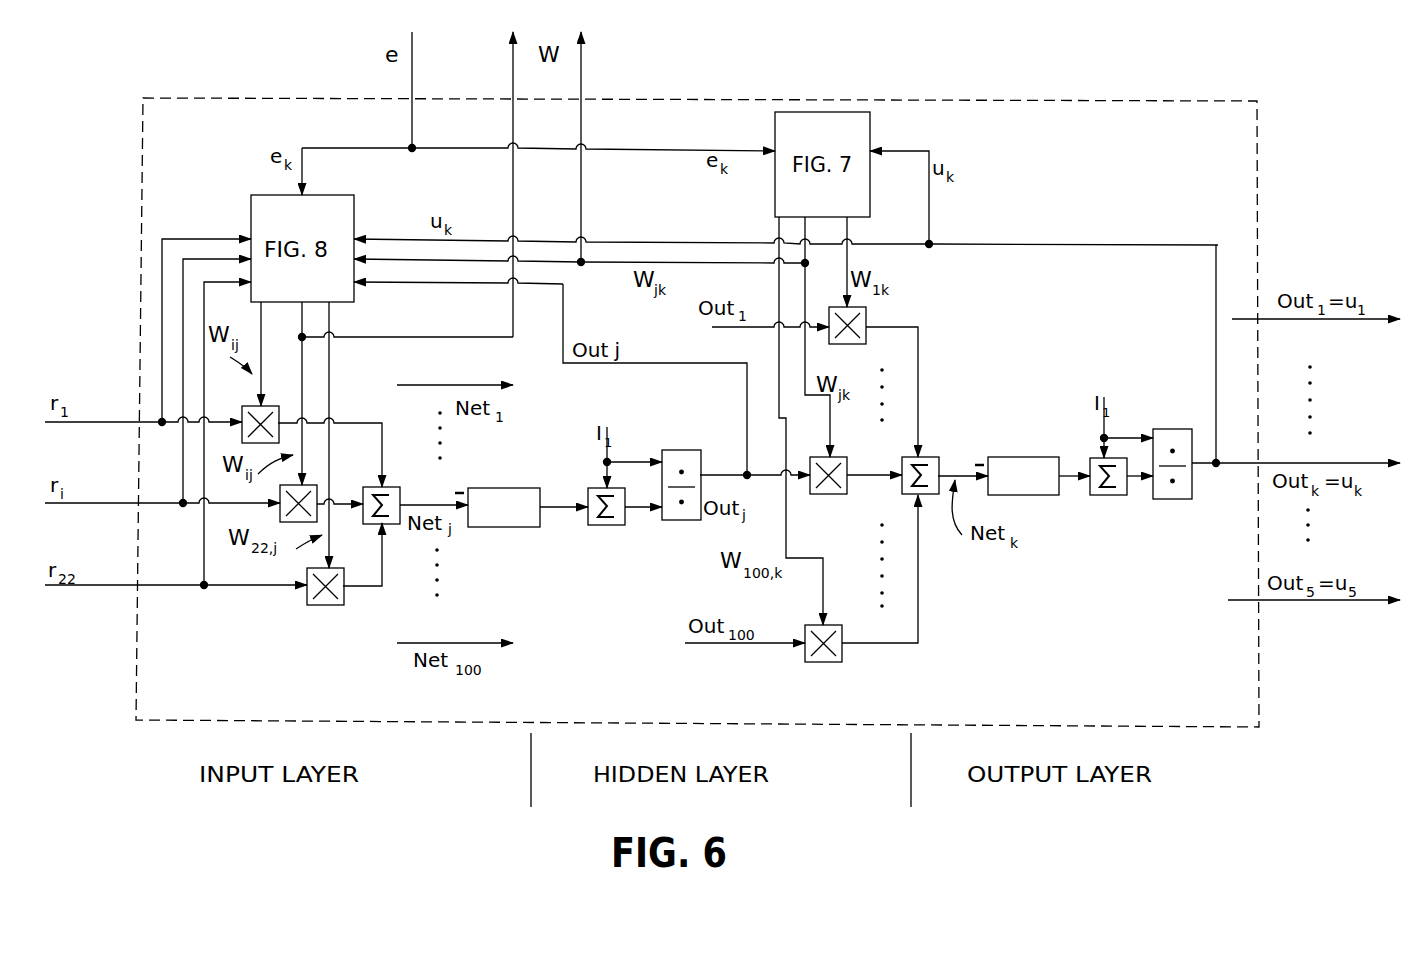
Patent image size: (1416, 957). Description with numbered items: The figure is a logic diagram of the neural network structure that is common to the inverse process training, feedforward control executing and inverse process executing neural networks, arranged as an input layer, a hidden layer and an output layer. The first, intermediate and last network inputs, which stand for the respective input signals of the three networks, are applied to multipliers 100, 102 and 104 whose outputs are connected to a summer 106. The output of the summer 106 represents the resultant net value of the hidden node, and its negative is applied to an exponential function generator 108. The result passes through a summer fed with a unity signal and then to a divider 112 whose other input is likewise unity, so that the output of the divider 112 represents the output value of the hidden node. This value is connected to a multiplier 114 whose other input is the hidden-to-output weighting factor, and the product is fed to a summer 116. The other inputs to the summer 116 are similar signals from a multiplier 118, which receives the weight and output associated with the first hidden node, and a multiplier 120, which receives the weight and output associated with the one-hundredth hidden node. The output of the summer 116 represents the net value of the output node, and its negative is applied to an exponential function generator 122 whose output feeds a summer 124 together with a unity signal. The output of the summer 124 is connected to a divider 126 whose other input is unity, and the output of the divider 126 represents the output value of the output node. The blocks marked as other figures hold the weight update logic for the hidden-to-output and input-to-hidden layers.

The multiplier 100 is at (277, 410).
The multiplier 102 is at (317, 487).
The multiplier 104 is at (333, 606).
The summer 106 is at (400, 487).
The exponential function generator 108 is at (512, 488).
The divider 112 is at (683, 450).
The multiplier 114 is at (840, 494).
The summer 116 is at (938, 458).
The multiplier 118 is at (865, 310).
The multiplier 120 is at (843, 660).
The exponential function generator 122 is at (1018, 457).
The summer 124 is at (1097, 495).
The divider 126 is at (1170, 429).